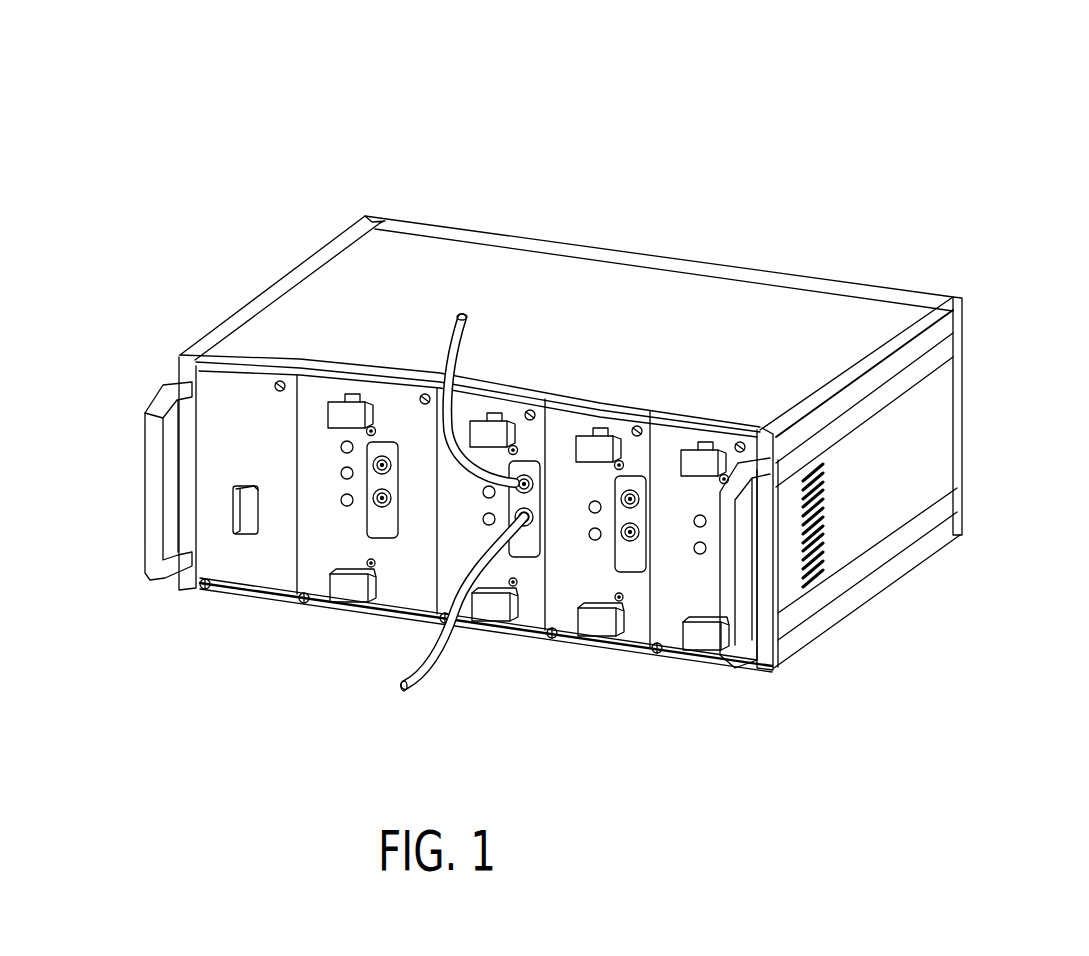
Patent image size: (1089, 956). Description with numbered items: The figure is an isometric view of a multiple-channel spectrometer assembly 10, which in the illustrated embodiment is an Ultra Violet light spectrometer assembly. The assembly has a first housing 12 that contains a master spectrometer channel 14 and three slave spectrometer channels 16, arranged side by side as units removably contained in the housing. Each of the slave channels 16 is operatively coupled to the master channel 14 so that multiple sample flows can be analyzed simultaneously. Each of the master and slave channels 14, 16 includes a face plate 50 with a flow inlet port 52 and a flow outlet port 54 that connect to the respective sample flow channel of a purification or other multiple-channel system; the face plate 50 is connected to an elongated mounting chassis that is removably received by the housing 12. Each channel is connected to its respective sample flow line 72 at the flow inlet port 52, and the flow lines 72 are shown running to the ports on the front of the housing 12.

The multiple-channel spectrometer assembly 10 is at (963, 226).
The first housing 12 is at (911, 345).
The master spectrometer channel 14 is at (362, 439).
The slave spectrometer channel 16 is at (528, 622).
The face plate 50 is at (395, 410).
The flow inlet port 52 is at (380, 497).
The flow outlet port 54 is at (383, 465).
The sample flow line 72 is at (460, 350).